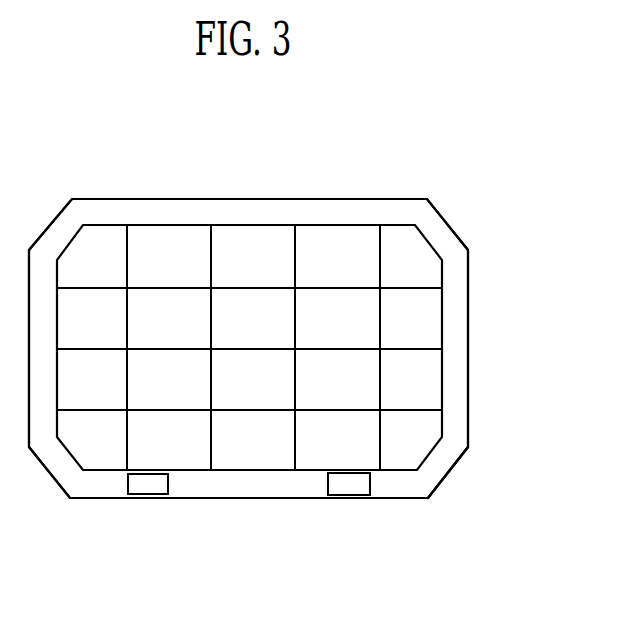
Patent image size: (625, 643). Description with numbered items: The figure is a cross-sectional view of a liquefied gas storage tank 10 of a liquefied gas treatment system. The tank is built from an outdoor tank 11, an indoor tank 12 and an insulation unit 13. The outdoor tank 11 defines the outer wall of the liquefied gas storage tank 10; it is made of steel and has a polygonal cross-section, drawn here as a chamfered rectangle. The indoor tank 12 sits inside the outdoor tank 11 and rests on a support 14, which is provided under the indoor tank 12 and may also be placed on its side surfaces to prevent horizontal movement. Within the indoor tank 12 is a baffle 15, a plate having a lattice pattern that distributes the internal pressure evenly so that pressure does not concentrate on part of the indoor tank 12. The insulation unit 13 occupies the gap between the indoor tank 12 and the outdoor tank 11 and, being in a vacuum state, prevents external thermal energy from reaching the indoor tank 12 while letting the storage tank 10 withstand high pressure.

The liquefied gas storage tank 10 is at (358, 195).
The outdoor tank 11 is at (458, 233).
The indoor tank 12 is at (442, 328).
The insulation unit 13 is at (460, 465).
The support 14 is at (352, 482).
The baffle 15 is at (101, 410).